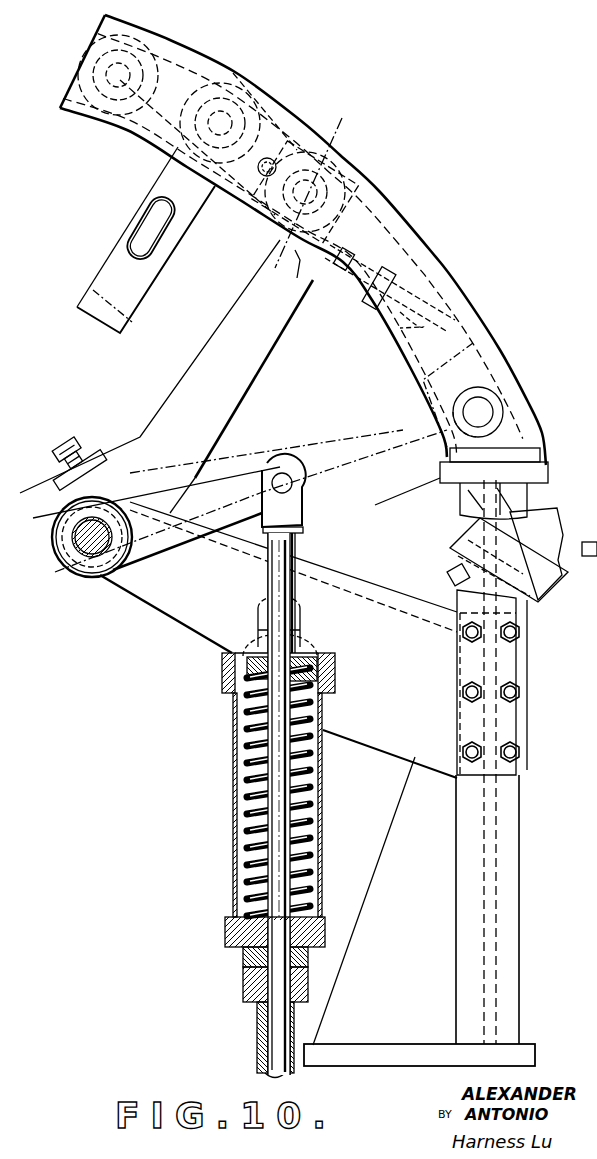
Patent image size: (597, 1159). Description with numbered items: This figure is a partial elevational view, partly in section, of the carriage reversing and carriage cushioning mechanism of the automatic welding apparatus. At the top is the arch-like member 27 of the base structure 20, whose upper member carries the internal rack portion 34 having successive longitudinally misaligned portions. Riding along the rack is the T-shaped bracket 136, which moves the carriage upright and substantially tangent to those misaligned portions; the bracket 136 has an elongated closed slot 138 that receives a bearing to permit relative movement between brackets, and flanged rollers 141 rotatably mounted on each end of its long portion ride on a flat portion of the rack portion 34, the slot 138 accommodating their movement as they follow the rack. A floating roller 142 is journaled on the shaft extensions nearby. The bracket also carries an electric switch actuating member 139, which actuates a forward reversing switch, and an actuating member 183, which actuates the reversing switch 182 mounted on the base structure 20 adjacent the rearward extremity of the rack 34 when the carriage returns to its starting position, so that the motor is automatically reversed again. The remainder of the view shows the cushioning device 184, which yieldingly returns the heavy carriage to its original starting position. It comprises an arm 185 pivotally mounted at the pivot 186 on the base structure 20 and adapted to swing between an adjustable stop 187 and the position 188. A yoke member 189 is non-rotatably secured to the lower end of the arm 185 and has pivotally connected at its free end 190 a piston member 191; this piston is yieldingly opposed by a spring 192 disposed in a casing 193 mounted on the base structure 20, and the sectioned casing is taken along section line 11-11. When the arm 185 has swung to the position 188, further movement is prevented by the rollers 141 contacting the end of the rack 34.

The section line 11- 11 is at (360, 139).
The base structure 20 is at (498, 980).
The arch-like member 27 is at (512, 873).
The internal rack portion 34 is at (470, 325).
The T-shaped bracket 136 is at (182, 204).
The elongated closed slot 138 is at (166, 246).
The electric switch actuating member 139 is at (263, 180).
The flanged rollers 141 is at (92, 50).
The floating roller 142 is at (236, 88).
The reversing switch 182 is at (450, 548).
The actuating member 183 is at (430, 300).
The cushioning device 184 is at (240, 806).
The arm 185 is at (200, 365).
The pivot 186 is at (68, 578).
The adjustable stop 187 is at (62, 430).
The position 188 is at (350, 508).
The yoke member 189 is at (230, 473).
The free end 190 is at (282, 483).
The piston member 191 is at (312, 660).
The spring 192 is at (323, 772).
The casing 193 is at (323, 826).